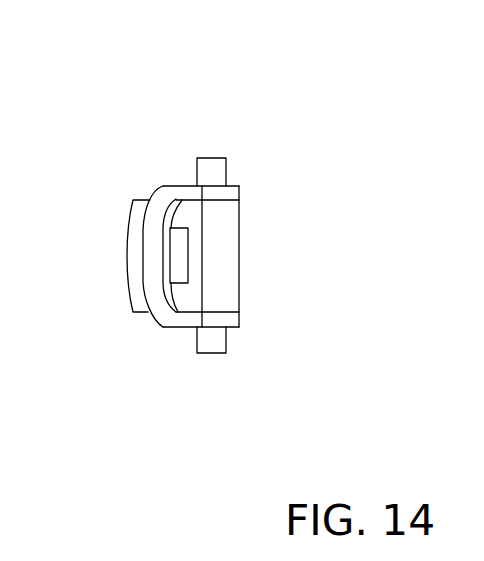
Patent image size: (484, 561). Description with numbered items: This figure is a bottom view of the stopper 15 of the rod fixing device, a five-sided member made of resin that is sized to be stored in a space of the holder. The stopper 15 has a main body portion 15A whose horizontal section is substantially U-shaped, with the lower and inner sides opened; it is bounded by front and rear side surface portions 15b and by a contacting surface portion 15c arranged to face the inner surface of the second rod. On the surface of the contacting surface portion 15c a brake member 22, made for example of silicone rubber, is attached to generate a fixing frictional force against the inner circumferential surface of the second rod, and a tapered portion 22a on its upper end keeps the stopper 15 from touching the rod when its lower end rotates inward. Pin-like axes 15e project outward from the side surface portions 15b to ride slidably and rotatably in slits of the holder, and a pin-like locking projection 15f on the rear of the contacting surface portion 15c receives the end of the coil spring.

The stopper 15 is at (319, 102).
The main body portion 15A is at (170, 313).
The front and rear side surface portions 15b is at (177, 186).
The contacting surface portion 15c is at (150, 290).
The axes 15e is at (210, 173).
The locking projection 15f is at (178, 258).
The brake member 22 is at (127, 267).
The tapered portion 22a is at (133, 215).